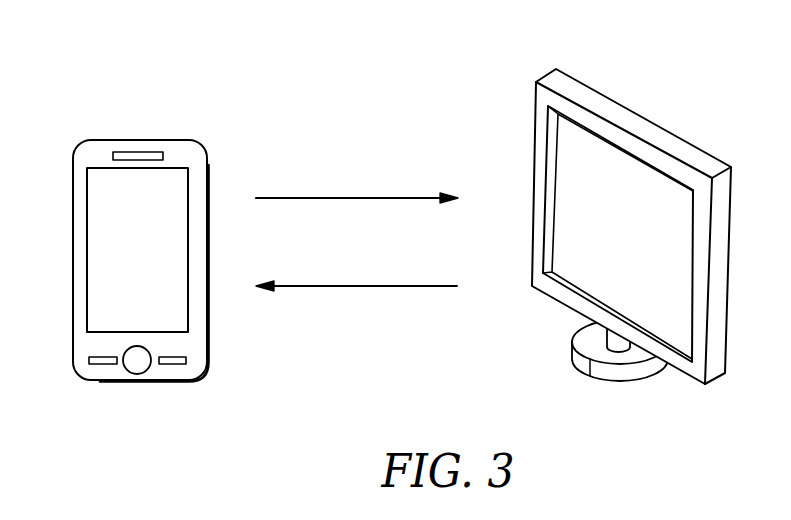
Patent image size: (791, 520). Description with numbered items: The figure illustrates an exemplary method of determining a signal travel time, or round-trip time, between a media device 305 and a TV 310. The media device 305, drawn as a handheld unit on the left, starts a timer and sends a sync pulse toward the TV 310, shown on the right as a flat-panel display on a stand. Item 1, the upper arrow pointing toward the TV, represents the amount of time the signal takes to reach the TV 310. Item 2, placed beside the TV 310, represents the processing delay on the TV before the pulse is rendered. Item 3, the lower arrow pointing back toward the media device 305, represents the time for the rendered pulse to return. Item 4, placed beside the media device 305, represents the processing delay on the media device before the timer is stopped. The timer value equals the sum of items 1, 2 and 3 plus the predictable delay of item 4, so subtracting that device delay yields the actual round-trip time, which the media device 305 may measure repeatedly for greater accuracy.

The media device 305 is at (140, 140).
The TV 310 is at (642, 118).
The item 1 is at (357, 186).
The item 2 is at (651, 245).
The item 3 is at (356, 274).
The item 4 is at (120, 257).